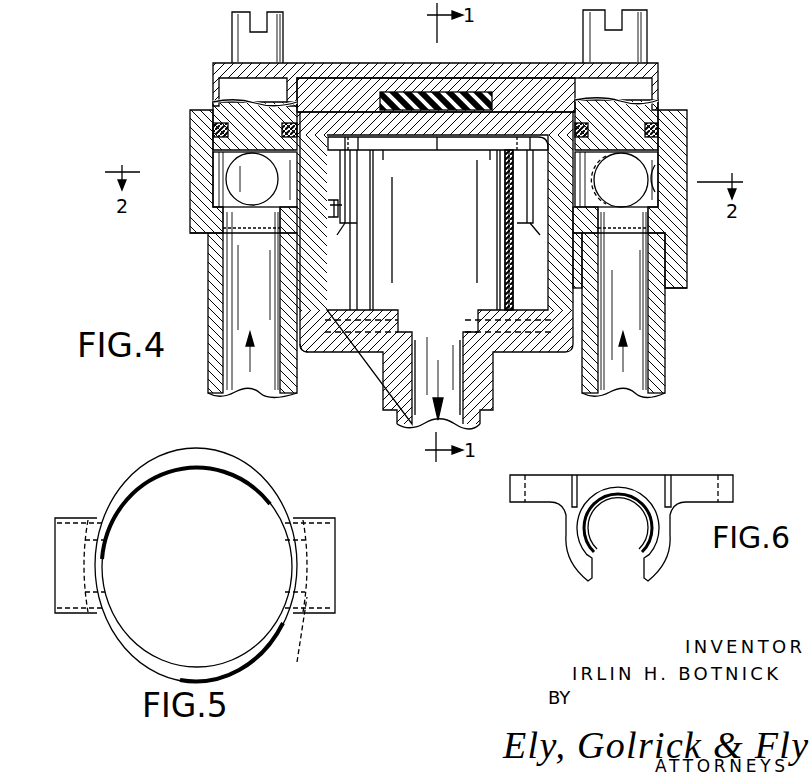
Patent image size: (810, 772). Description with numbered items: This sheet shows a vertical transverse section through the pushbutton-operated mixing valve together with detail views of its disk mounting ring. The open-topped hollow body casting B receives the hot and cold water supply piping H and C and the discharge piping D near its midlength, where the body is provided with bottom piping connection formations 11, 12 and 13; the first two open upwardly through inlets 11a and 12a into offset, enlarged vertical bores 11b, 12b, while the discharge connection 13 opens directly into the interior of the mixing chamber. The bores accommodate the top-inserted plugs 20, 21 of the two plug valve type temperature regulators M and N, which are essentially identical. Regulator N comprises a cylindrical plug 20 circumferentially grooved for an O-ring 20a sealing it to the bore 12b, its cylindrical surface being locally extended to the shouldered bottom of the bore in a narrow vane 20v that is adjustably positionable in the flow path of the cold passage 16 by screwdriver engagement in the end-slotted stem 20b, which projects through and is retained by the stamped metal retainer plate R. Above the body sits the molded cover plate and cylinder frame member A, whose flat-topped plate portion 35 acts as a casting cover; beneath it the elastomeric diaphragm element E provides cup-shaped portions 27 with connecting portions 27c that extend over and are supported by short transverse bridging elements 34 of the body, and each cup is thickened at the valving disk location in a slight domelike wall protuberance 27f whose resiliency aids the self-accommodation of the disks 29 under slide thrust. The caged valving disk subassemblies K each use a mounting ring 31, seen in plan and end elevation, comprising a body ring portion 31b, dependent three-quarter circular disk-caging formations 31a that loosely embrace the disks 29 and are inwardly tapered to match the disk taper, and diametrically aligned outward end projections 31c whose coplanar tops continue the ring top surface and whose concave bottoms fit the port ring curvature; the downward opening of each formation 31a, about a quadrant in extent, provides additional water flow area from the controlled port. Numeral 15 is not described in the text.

In FIG. 4, the bottom piping connection formation 11 is at (200, 279).
In FIG. 4, the inlet 11a is at (246, 230).
In FIG. 4, the vertical bore 11b is at (247, 222).
In FIG. 4, the bottom piping connection formation 12 is at (678, 280).
In FIG. 4, the inlet 12a is at (633, 232).
In FIG. 4, the vertical bore 12b is at (632, 226).
In FIG. 4, the discharge connection 13 is at (494, 364).
In FIG. 4, the left ball check valve 15 is at (228, 180).
In FIG. 4, the cold passage 16 is at (640, 188).
In FIG. 4, the cylindrical plug 20 is at (643, 88).
In FIG. 4, the O-ring 20a is at (662, 123).
In FIG. 4, the end-slotted stem 20b is at (620, 56).
In FIG. 4, the vane 20v is at (662, 173).
In FIG. 4, the plug 21 is at (228, 98).
In FIG. 4, the cup-shaped portion 27 is at (450, 285).
In FIG. 4, the connecting portion 27c is at (420, 90).
In FIG. 4, the wall protuberance 27f is at (522, 178).
In FIG. 4, the disk 29 is at (336, 217).
In FIG. 5, the mounting ring 31 is at (120, 652).
In FIG. 6, the mounting ring 31 is at (672, 476).
In FIG. 4, the disk-caging formation 31a is at (355, 232).
In FIG. 5, the disk-caging formation 31a is at (209, 575).
In FIG. 6, the disk-caging formation 31a is at (658, 563).
In FIG. 4, the body ring portion 31b is at (450, 145).
In FIG. 5, the body ring portion 31b is at (246, 672).
In FIG. 6, the body ring portion 31b is at (510, 491).
In FIG. 5, the outward end projection 31c is at (72, 615).
In FIG. 6, the outward end projection 31c is at (583, 485).
In FIG. 4, the bridging element 34 is at (385, 127).
In FIG. 4, the plate portion 35 is at (532, 90).
In FIG. 4, the cover plate and cylinder frame member A is at (316, 93).
In FIG. 4, the hollow body casting B is at (362, 356).
In FIG. 4, the cold water supply piping C is at (667, 379).
In FIG. 4, the discharge piping D is at (483, 422).
In FIG. 4, the hot water supply piping H is at (209, 370).
In FIG. 4, the caged valving disk subassembly K is at (350, 145).
In FIG. 4, the temperature regulator M is at (229, 54).
In FIG. 4, the temperature regulator N is at (584, 56).
In FIG. 4, the retainer plate R is at (464, 66).